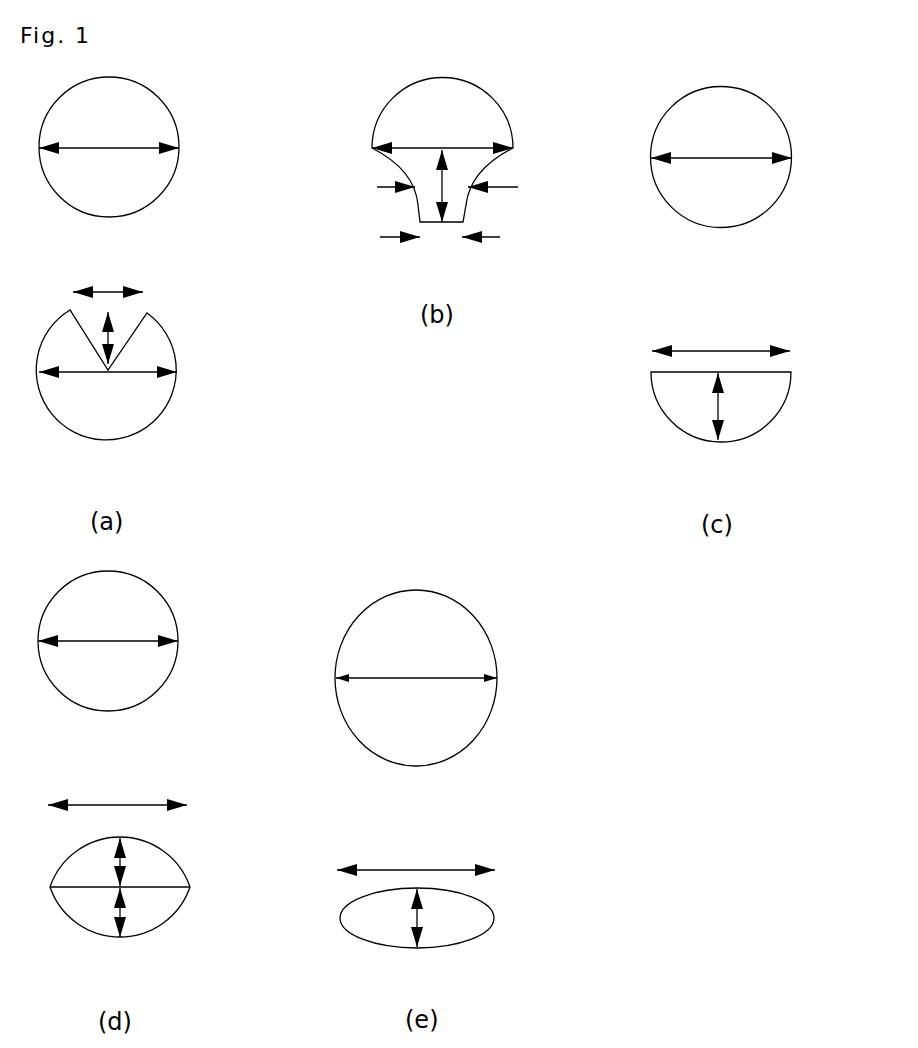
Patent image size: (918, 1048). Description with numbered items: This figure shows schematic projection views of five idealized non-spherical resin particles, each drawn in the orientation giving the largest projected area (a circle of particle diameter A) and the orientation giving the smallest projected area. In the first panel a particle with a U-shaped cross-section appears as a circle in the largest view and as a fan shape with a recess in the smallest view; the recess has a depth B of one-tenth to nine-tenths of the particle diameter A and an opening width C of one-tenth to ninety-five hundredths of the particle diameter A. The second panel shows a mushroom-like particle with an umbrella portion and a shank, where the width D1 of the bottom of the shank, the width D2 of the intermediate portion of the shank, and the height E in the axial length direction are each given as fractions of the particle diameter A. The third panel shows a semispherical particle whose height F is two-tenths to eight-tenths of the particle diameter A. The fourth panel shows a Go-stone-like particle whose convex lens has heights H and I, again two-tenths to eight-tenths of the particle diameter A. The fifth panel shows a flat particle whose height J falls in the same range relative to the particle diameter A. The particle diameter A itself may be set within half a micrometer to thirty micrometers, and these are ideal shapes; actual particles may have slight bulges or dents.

The particle diameter A is at (113, 148).
The depth of the recess B is at (110, 366).
The opening width of the recess C is at (110, 290).
The width of the bottom of the shank D1 is at (440, 258).
The width of the intermediate portion of the shank D2 is at (468, 188).
The height in the axial length direction E is at (445, 186).
The height of the semispherical particle F is at (720, 403).
The height of the convex lens H is at (122, 860).
The height of the convex lens I is at (122, 915).
The height of the flat particle J is at (425, 920).